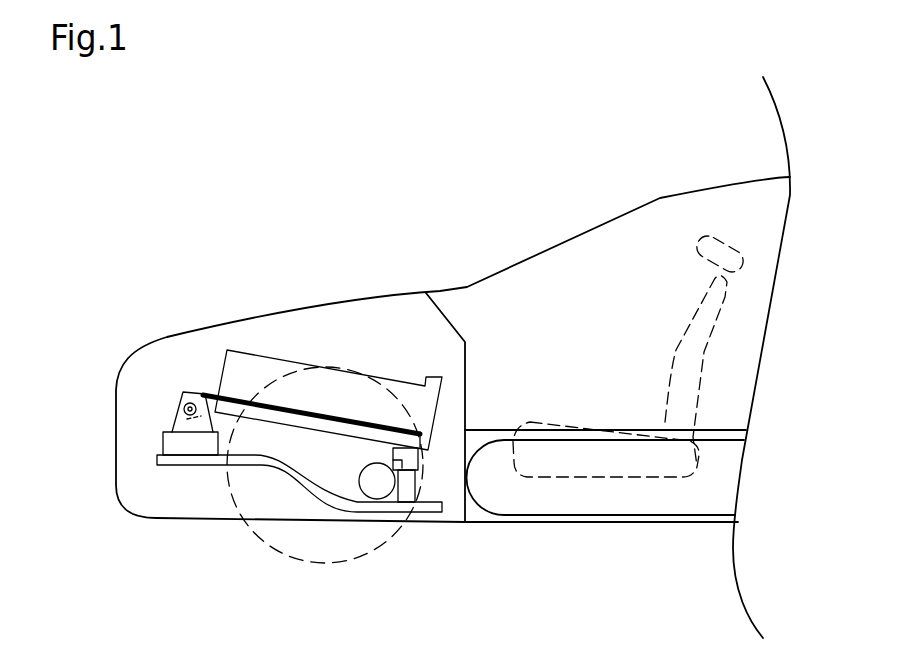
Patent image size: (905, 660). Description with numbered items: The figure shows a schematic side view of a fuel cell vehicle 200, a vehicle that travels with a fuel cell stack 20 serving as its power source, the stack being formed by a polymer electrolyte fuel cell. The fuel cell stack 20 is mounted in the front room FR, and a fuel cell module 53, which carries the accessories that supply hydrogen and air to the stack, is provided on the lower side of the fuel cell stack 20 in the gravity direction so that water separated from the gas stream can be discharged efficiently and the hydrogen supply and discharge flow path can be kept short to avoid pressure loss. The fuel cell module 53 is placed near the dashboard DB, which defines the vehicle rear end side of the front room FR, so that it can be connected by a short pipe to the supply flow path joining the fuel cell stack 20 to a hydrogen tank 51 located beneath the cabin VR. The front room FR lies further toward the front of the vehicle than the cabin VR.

The fuel cell vehicle 200 is at (478, 193).
The fuel cell stack 20 is at (295, 362).
The hydrogen tank 51 is at (568, 515).
The fuel cell module 53 is at (383, 503).
The front room FR is at (175, 358).
The dashboard DB is at (452, 323).
The cabin VR is at (626, 309).